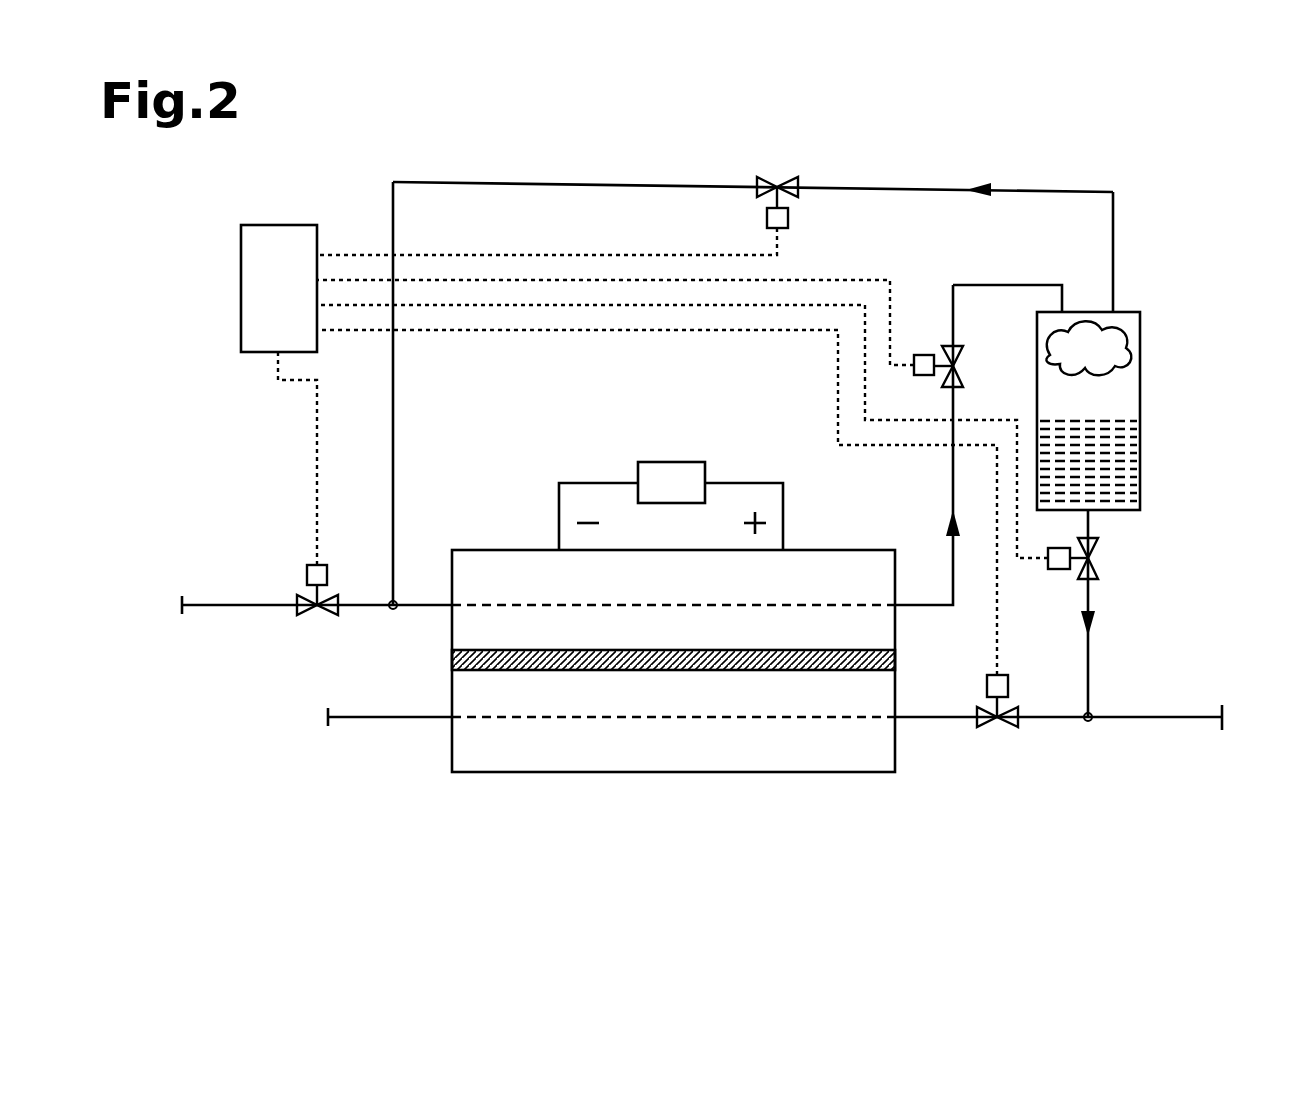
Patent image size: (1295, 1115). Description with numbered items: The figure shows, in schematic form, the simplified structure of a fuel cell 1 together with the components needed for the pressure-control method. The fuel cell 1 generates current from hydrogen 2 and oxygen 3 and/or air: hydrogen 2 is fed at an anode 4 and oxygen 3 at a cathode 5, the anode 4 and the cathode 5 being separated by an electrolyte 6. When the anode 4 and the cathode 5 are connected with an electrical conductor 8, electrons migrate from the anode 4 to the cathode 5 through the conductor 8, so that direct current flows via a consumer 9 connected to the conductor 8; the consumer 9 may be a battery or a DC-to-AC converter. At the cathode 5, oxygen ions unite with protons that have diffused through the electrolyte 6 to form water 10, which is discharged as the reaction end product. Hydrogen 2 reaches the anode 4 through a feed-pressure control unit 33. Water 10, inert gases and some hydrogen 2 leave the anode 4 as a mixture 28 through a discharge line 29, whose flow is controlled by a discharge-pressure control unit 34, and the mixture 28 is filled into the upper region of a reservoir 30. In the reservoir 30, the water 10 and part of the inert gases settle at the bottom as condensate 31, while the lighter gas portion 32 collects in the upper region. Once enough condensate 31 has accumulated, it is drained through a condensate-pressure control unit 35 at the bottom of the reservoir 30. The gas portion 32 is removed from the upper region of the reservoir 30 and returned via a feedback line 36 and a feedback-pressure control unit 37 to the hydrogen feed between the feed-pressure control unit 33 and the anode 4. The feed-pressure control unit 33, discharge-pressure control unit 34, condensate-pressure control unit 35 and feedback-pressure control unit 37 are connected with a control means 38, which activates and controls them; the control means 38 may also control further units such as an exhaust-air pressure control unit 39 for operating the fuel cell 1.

The fuel cell 1 is at (408, 777).
The hydrogen 2 is at (186, 585).
The oxygen 3 is at (334, 695).
The anode 4 is at (510, 573).
The cathode 5 is at (577, 747).
The electrolyte 6 is at (752, 660).
The electrical conductor 8 is at (745, 482).
The consumer 9 is at (670, 483).
The water 10 is at (1205, 735).
The mixture 28 is at (946, 516).
The discharge line 29 is at (995, 280).
The reservoir 30 is at (1186, 364).
The condensate 31 is at (1100, 467).
The gas portion 32 is at (978, 186).
The feed-pressure control unit 33 is at (278, 548).
The discharge-pressure control unit 34 is at (990, 331).
The condensate-pressure control unit 35 is at (1130, 568).
The feedback line 36 is at (487, 180).
The feedback-pressure control unit 37 is at (762, 155).
The control means 38 is at (268, 292).
The exhaust-air pressure control unit 39 is at (1006, 758).